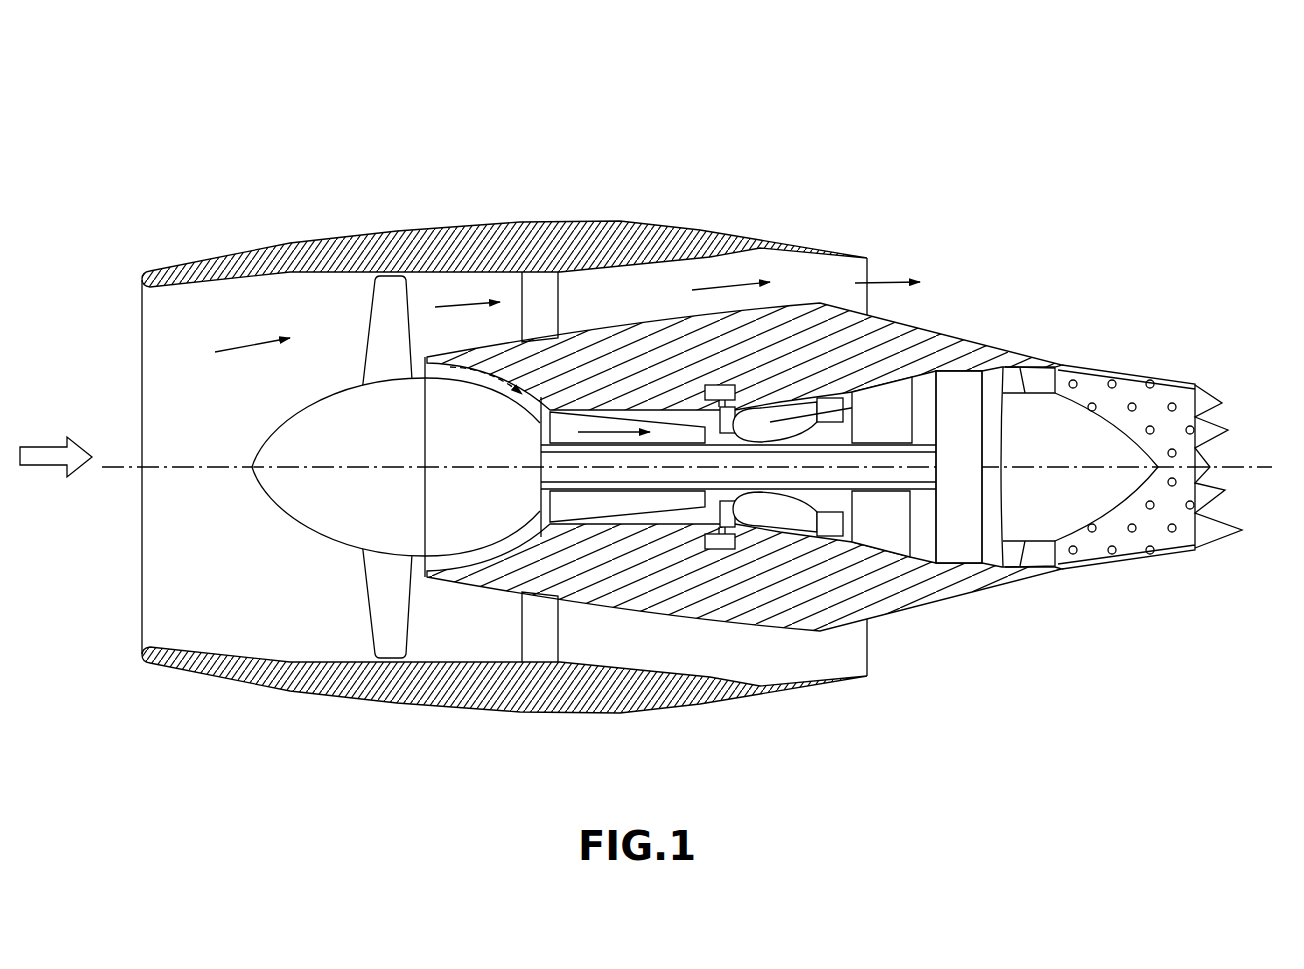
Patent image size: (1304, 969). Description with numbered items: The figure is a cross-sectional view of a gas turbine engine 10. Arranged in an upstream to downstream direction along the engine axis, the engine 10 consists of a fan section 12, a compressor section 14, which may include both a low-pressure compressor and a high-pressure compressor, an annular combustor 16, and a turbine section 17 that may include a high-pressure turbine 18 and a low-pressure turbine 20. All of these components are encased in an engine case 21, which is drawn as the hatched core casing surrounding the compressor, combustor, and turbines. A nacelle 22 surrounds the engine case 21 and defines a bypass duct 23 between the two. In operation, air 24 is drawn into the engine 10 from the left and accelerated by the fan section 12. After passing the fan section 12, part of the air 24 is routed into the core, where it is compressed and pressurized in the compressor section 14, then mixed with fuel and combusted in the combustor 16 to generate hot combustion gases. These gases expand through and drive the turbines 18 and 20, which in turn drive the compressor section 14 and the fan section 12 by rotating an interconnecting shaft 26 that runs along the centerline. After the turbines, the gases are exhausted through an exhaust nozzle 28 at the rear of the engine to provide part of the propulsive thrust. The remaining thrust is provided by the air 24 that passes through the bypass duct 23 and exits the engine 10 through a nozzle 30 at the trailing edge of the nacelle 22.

The gas turbine engine 10 is at (212, 142).
The fan section 12 is at (297, 526).
The compressor section 14 is at (566, 425).
The annular combustor 16 is at (775, 422).
The turbine section 17 is at (895, 420).
The high-pressure turbine 18 is at (873, 532).
The low-pressure turbine 20 is at (965, 540).
The engine case 21 is at (793, 341).
The nacelle 22 is at (700, 232).
The bypass duct 23 is at (593, 302).
The air 24 is at (40, 466).
The interconnecting shaft 26 is at (890, 476).
The exhaust nozzle 28 is at (1177, 381).
The nozzle 30 is at (843, 256).